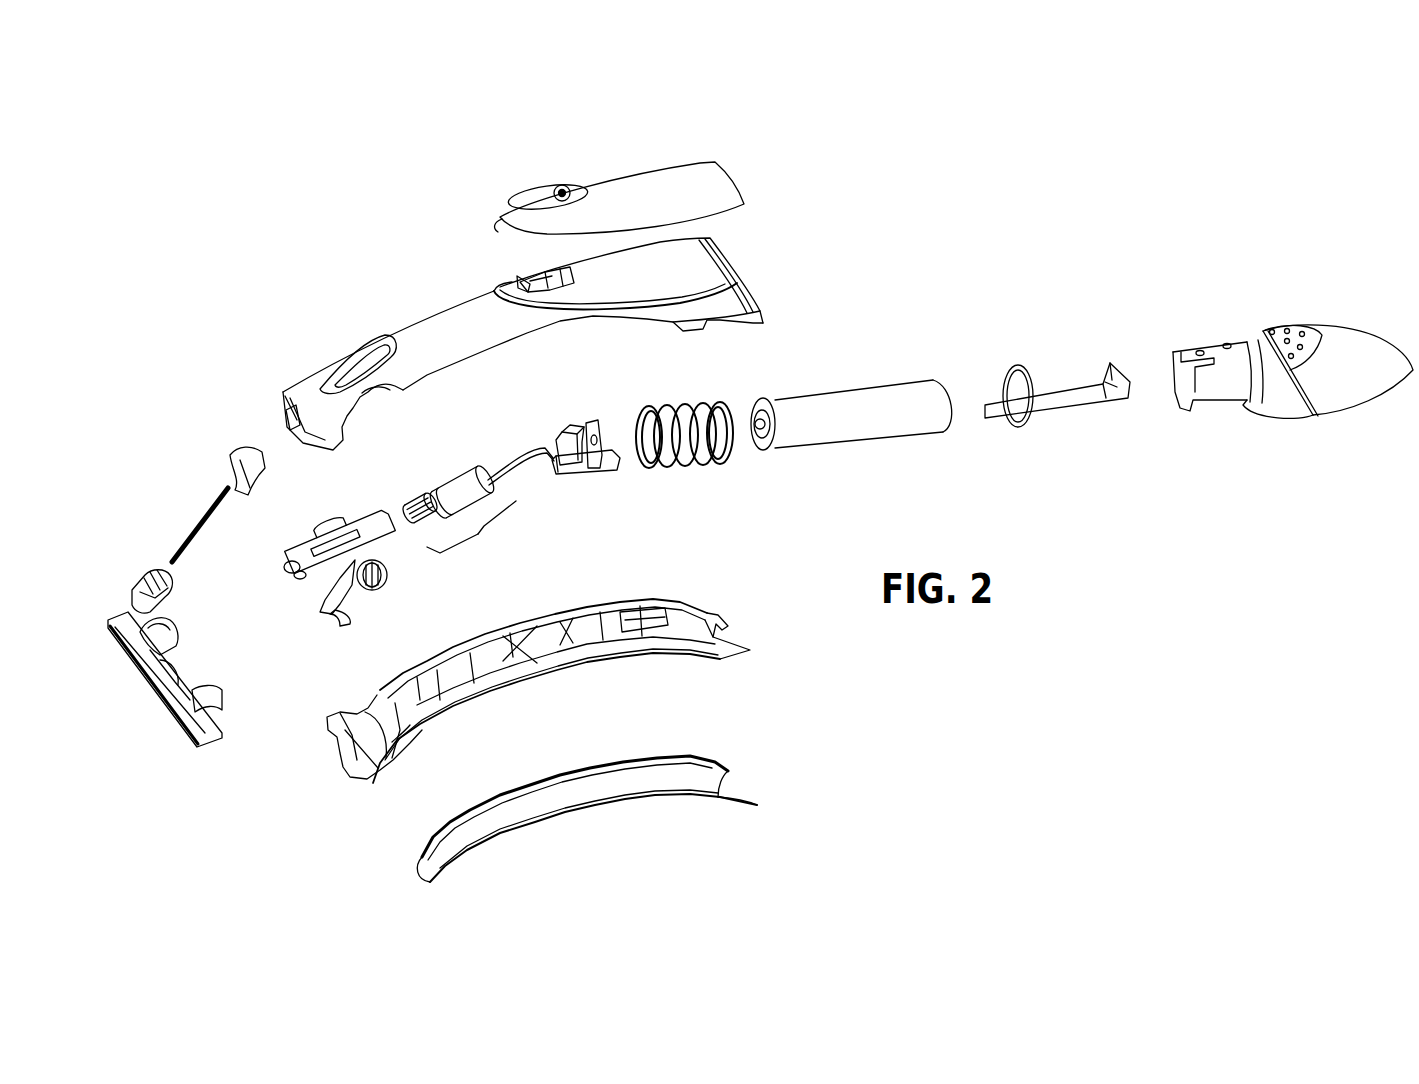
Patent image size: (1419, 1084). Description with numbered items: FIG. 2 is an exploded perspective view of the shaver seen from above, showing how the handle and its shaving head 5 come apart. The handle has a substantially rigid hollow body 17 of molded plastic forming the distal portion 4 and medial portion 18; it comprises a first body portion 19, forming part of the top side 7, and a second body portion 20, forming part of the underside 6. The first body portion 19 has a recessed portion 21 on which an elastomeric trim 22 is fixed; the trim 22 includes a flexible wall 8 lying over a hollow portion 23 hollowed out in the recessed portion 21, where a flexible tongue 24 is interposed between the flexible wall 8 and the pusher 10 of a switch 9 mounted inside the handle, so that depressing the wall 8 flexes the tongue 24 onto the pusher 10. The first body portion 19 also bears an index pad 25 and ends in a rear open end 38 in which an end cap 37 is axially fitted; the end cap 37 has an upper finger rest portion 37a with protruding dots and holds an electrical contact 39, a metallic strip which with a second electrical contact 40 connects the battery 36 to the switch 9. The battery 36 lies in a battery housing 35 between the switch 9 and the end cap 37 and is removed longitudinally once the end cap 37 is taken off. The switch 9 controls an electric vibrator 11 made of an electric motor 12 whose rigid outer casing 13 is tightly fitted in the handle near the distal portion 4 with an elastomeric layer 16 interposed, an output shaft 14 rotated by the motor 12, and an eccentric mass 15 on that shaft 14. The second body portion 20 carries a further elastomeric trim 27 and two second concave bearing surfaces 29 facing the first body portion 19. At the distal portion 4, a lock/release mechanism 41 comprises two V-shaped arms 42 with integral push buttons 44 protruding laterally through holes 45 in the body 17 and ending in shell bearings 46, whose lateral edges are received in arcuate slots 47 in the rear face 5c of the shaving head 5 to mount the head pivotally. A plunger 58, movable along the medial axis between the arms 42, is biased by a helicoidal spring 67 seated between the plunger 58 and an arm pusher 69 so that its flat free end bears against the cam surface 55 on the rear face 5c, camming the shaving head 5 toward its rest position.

The distal portion 4 is at (277, 388).
The shaving head 5 is at (200, 748).
The rear face 5c is at (205, 672).
The underside 6 is at (603, 665).
The top side 7 is at (443, 320).
The flexible wall 8 is at (540, 200).
The switch 9 is at (572, 466).
The pusher 10 is at (563, 426).
The electric vibrator 11 is at (478, 540).
The electric motor 12 is at (452, 462).
The rigid outer casing 13 is at (480, 464).
The output shaft 14 is at (421, 496).
The eccentric mass 15 is at (412, 494).
The elastomeric layer 16 is at (470, 506).
The hollow body 17 is at (764, 292).
The medial portion 18 is at (487, 283).
The first body portion 19 is at (291, 382).
The second body portion 20 is at (517, 665).
The recessed portion 21 is at (722, 252).
The elastomeric trim 22 is at (695, 171).
The hollow portion 23 is at (578, 272).
The flexible tongue 24 is at (524, 282).
The recess 25 is at (352, 366).
The elastomeric trim 27 is at (583, 825).
The second concave bearing surfaces 29 is at (465, 668).
The head body 35 is at (1171, 354).
The battery 36 is at (866, 398).
The end cap 37 is at (1360, 350).
The upper finger rest portion 37a is at (1280, 328).
The rear open end 38 is at (766, 314).
The electrical contact 39 is at (1080, 400).
The electrical contact 40 is at (594, 428).
The lock/release mechanism 41 is at (285, 632).
The arms 42 is at (359, 522).
The push buttons 44 is at (330, 522).
The holes 45 is at (370, 397).
The shell bearings 46 is at (318, 612).
The arcuate slots 47 is at (176, 646).
The cam surface 55 is at (165, 665).
The plunger 58 is at (137, 570).
The spring 67 is at (189, 532).
The arm pusher 69 is at (240, 446).